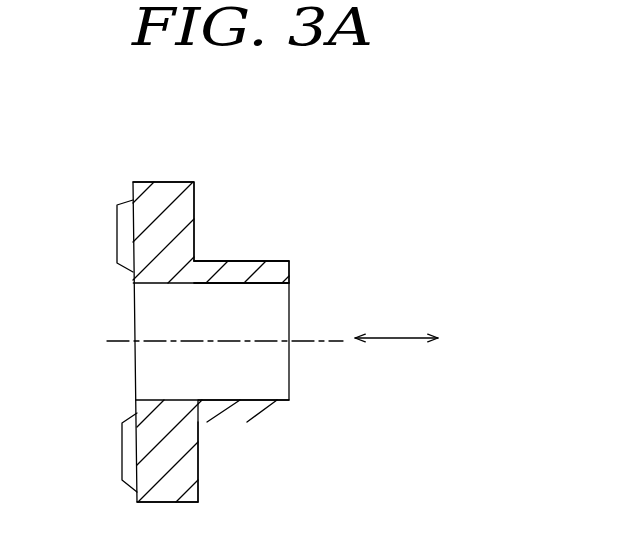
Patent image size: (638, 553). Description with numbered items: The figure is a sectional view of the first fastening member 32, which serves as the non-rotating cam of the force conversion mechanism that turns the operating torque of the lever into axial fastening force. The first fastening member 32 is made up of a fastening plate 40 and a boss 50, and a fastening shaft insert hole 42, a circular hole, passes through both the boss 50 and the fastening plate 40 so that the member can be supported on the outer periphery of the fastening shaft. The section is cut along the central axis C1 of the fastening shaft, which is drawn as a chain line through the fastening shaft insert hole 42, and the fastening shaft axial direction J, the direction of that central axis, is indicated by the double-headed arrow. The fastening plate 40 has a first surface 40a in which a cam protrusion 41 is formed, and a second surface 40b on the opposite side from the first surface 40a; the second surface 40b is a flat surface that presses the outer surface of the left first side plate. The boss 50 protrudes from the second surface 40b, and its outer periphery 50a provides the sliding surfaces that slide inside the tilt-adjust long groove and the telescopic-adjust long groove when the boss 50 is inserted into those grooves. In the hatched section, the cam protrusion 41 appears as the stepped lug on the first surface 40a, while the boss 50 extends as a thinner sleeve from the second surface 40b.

The fastening plate 40 is at (148, 182).
The first fastening member 32 is at (178, 180).
The cam protrusion 41 is at (117, 233).
The boss 50 is at (290, 263).
The outer periphery of the boss 50a is at (243, 260).
The fastening shaft insert hole 42 is at (258, 283).
The first surface 40a is at (137, 502).
The second surface 40b is at (198, 488).
The central axis C1 is at (320, 341).
The fastening shaft axial direction J is at (398, 338).